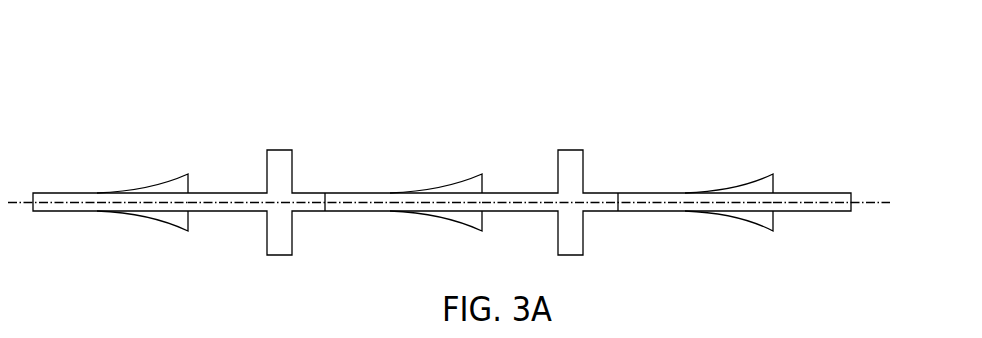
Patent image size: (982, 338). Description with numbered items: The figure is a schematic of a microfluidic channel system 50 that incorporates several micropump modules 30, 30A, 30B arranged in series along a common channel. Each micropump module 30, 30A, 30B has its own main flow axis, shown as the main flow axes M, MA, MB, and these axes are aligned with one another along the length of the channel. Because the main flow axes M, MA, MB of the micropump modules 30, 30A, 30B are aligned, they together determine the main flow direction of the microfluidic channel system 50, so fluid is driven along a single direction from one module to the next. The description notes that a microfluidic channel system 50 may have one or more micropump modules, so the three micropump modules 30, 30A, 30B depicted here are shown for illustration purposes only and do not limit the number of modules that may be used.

The microfluidic channel system 50 is at (487, 133).
The micropump module 30 is at (150, 175).
The micropump module 30A is at (392, 188).
The micropump module 30B is at (690, 182).
The main flow axis M is at (103, 202).
The main flow axis MA is at (438, 205).
The main flow axis MB is at (754, 203).